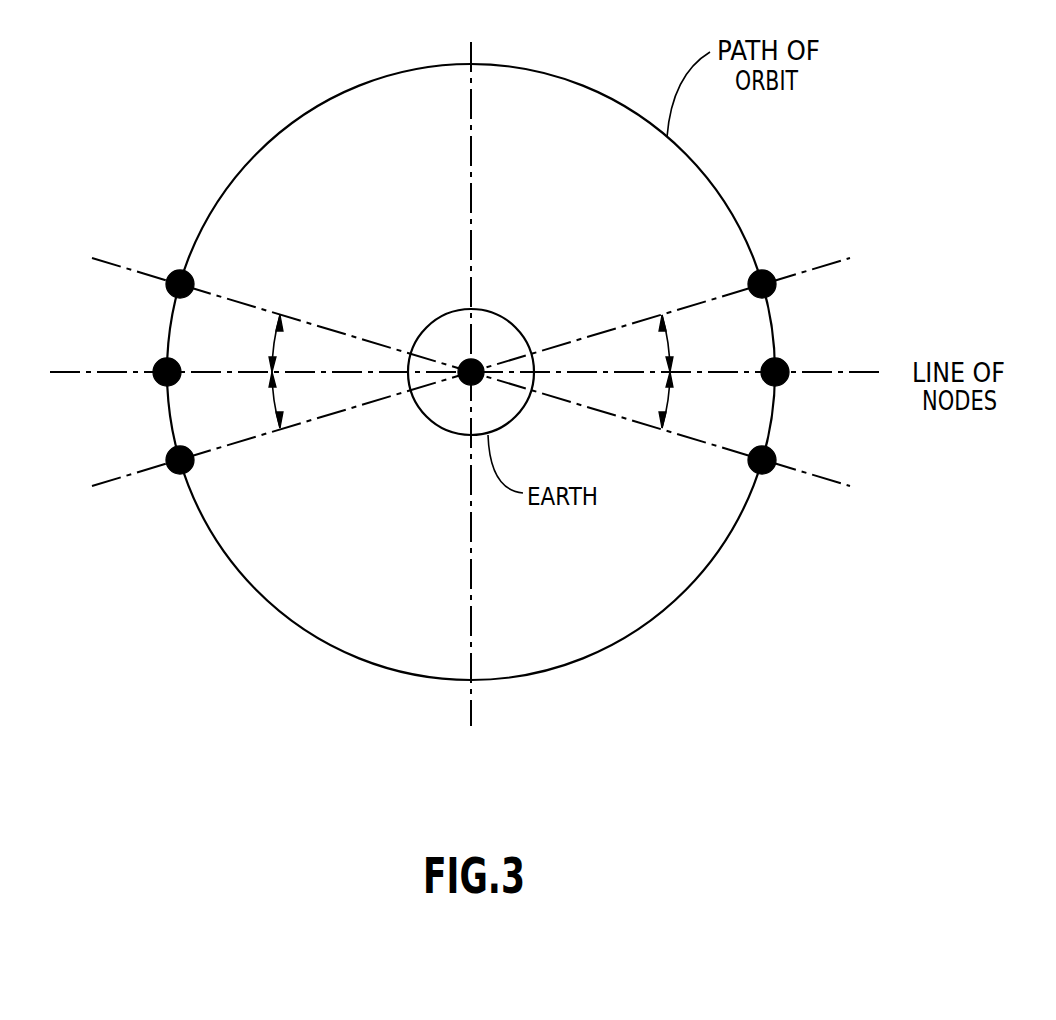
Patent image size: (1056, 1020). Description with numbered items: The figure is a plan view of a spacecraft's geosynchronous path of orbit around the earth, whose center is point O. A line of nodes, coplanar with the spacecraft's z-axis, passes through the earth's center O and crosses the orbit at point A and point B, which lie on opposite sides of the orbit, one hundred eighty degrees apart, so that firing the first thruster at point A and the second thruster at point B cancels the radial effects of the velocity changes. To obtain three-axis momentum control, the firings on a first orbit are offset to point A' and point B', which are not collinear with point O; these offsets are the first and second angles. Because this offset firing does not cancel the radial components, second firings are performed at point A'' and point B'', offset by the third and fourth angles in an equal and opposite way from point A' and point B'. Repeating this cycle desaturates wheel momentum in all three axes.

The earth's center O is at (485, 364).
The point A is at (786, 383).
The point A' is at (770, 261).
The point A'' is at (772, 481).
The point B is at (155, 383).
The point B' is at (170, 261).
The point B'' is at (170, 480).